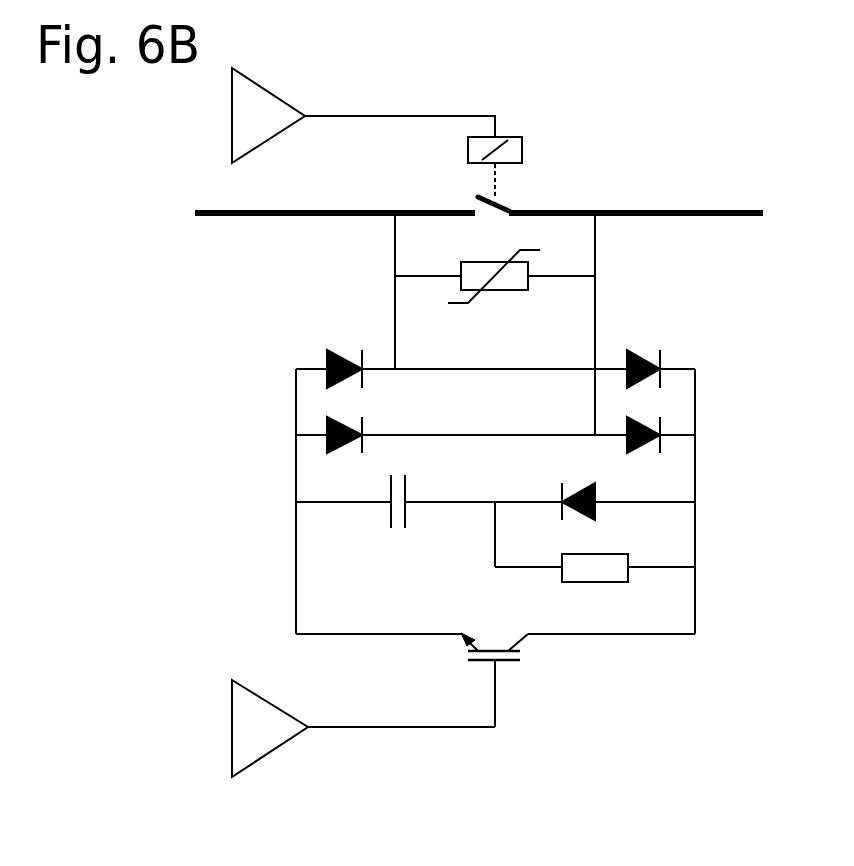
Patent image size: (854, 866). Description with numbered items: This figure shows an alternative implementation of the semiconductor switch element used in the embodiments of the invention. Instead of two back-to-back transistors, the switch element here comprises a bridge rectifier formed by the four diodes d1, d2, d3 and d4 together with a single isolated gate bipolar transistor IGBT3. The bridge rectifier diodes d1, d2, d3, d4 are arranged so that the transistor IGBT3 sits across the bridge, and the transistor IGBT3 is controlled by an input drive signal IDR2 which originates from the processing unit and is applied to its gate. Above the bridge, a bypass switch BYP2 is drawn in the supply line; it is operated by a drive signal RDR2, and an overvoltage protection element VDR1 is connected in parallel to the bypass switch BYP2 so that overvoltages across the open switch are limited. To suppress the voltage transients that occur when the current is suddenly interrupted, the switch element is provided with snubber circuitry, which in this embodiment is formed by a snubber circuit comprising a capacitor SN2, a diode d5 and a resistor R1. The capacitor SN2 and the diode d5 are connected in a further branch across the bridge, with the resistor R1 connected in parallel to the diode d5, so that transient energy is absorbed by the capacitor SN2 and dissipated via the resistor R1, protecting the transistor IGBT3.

The relay driver RDR2 is at (363, 115).
The bypass switch BYP2 is at (479, 175).
The overvoltage protection element VDR1 is at (495, 293).
The bridge rectifier diode d1 is at (344, 357).
The bridge rectifier diode d2 is at (643, 357).
The bridge rectifier diode d3 is at (344, 450).
The bridge rectifier diode d4 is at (643, 450).
The diode d5 is at (578, 491).
The capacitor SN2 is at (421, 501).
The resistor R1 is at (595, 556).
The isolated gate bipolar transistor IGBT3 is at (494, 666).
The input drive signal IDR2 is at (363, 728).